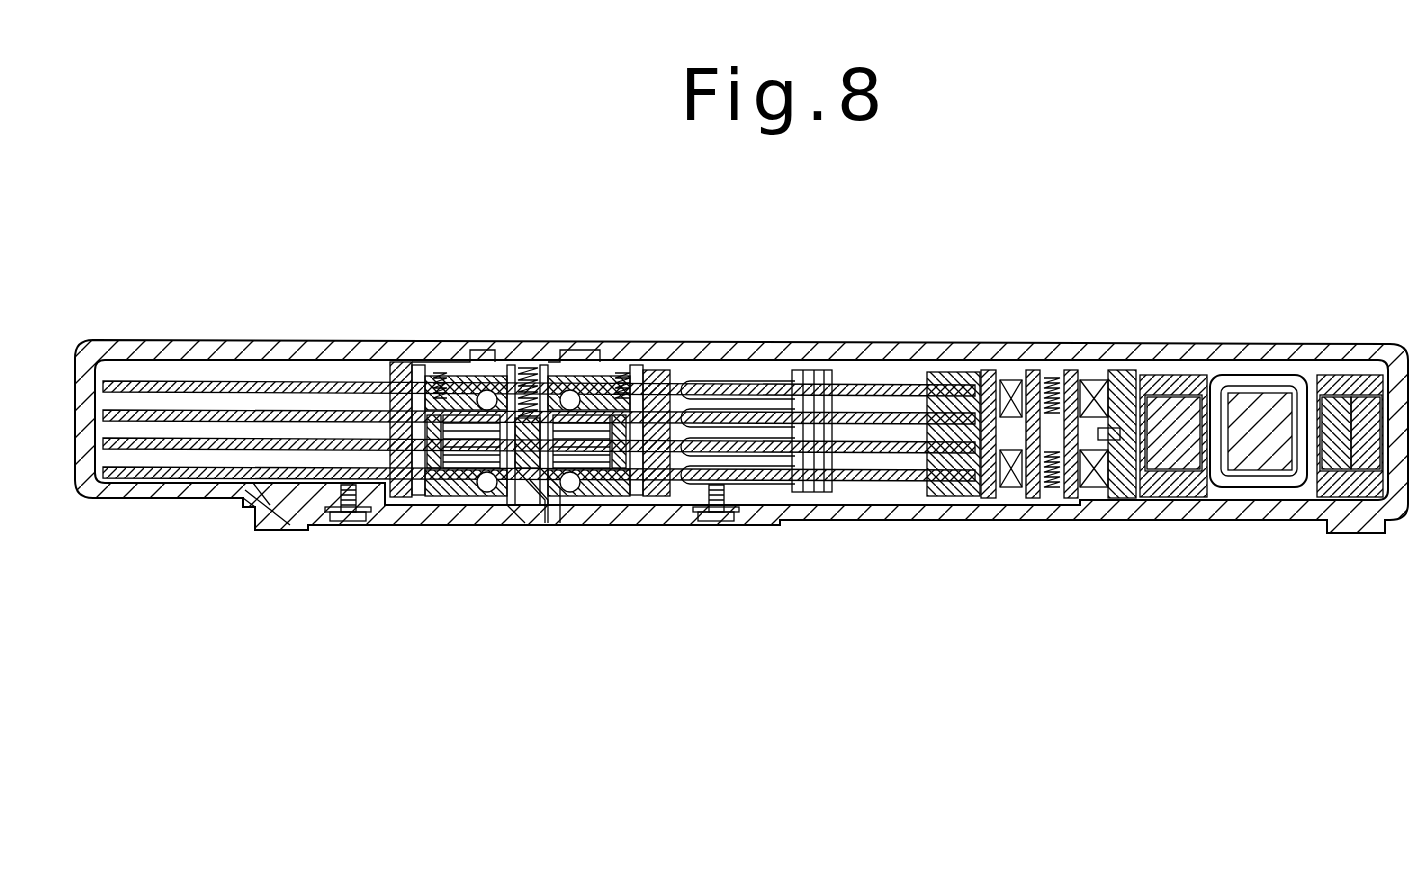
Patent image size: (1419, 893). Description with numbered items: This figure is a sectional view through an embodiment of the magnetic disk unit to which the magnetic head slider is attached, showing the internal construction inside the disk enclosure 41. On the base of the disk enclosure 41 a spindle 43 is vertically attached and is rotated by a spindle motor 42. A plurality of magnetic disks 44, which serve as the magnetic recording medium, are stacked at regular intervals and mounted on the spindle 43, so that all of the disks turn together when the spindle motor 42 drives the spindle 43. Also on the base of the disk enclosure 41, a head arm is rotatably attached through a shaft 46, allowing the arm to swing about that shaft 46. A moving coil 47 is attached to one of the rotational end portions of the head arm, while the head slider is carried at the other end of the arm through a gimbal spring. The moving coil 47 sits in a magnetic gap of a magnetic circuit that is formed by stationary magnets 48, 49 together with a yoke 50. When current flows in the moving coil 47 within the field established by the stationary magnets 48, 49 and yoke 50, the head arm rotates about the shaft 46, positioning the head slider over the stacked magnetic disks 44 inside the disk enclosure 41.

The disk enclosure 41 is at (407, 348).
The spindle motor 42 is at (570, 364).
The spindle 43 is at (597, 362).
The magnetic disks 44 is at (882, 390).
The shaft 46 is at (1075, 462).
The moving coil 47 is at (1277, 383).
The stationary magnet 48 is at (1195, 462).
The stationary magnet 49 is at (1333, 465).
The yoke 50 is at (1240, 410).